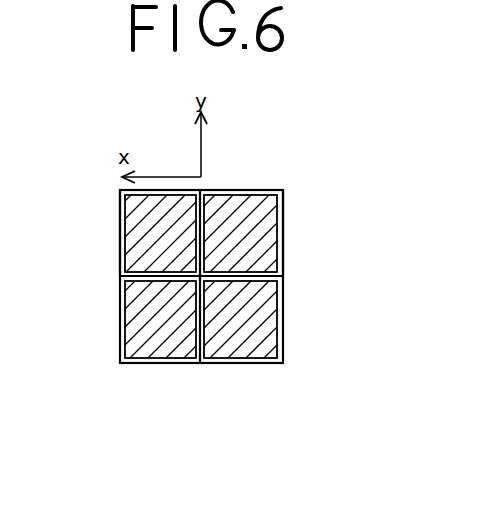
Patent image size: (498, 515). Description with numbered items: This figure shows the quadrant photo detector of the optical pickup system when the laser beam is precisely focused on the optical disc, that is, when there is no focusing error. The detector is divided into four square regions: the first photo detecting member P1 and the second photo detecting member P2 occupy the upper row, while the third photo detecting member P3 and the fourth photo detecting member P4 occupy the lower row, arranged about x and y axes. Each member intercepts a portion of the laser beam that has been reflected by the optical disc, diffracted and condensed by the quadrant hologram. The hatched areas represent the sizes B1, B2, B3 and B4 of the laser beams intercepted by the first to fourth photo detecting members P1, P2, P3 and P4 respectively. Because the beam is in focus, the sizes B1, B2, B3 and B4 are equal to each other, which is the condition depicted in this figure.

The first photo detecting member P1 is at (282, 201).
The second photo detecting member P2 is at (122, 207).
The third photo detecting member P3 is at (250, 365).
The fourth photo detecting member P4 is at (158, 365).
The size of laser beam intercepted by first photo detecting member B1 is at (276, 241).
The size of laser beam intercepted by second photo detecting member B2 is at (133, 246).
The size of laser beam intercepted by third photo detecting member B3 is at (274, 321).
The size of laser beam intercepted by fourth photo detecting member B4 is at (131, 320).